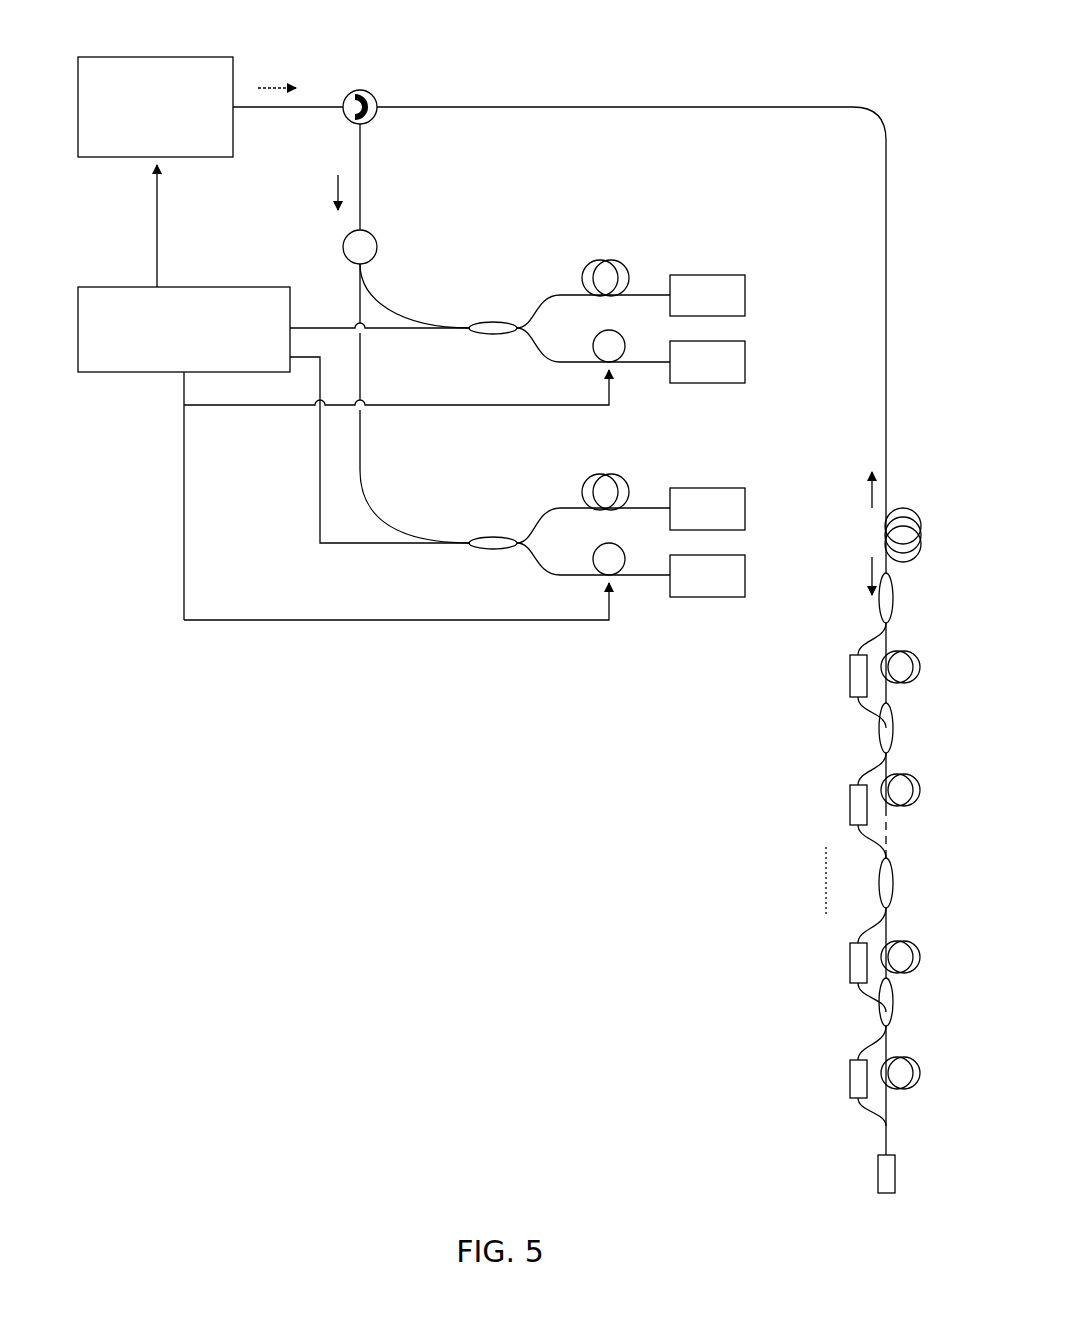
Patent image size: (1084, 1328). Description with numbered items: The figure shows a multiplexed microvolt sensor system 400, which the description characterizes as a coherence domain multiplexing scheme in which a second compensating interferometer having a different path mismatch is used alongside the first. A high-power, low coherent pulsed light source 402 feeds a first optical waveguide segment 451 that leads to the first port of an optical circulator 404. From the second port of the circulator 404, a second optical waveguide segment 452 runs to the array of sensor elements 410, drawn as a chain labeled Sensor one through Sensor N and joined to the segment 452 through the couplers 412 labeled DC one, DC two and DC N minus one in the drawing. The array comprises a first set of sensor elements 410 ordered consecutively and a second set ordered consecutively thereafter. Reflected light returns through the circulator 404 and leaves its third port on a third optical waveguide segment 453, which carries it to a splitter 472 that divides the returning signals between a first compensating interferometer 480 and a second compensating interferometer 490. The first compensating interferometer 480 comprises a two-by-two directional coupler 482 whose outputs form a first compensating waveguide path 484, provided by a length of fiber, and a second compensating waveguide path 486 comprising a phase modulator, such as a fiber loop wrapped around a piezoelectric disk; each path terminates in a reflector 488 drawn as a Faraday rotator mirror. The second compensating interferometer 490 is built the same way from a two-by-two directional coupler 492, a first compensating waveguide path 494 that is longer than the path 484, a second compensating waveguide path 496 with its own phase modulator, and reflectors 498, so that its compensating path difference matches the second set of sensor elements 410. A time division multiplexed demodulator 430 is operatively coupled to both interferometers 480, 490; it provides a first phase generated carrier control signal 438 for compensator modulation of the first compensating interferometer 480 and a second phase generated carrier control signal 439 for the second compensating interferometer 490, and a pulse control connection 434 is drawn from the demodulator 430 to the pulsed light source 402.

The multiplexed microvolt sensor system 400 is at (808, 32).
The pulsed light source 402 is at (194, 57).
The optical circulator 404 is at (352, 89).
The sensor elements 410 is at (858, 697).
The directional coupler 412 is at (880, 615).
The time division multiplexed demodulator 430 is at (116, 372).
The pulse control line 434 is at (157, 206).
The first phase generated carrier control signal 438 is at (420, 420).
The second phase generated carrier control signal 439 is at (386, 622).
The first optical waveguide segment 451 is at (280, 110).
The second optical waveguide segment 452 is at (578, 110).
The third optical waveguide segment 453 is at (362, 206).
The splitter 472 is at (377, 250).
The first compensating interferometer 480 is at (586, 310).
The 2×2 directional coupler 482 is at (487, 336).
The first compensating waveguide path 484 is at (606, 260).
The second compensating waveguide path 486 is at (610, 330).
The reflector 488 is at (745, 280).
The second compensating interferometer 490 is at (586, 536).
The 2×2 directional coupler 492 is at (487, 551).
The first compensating waveguide path 494 is at (606, 474).
The second compensating waveguide path 496 is at (610, 545).
The reflector 498 is at (745, 493).